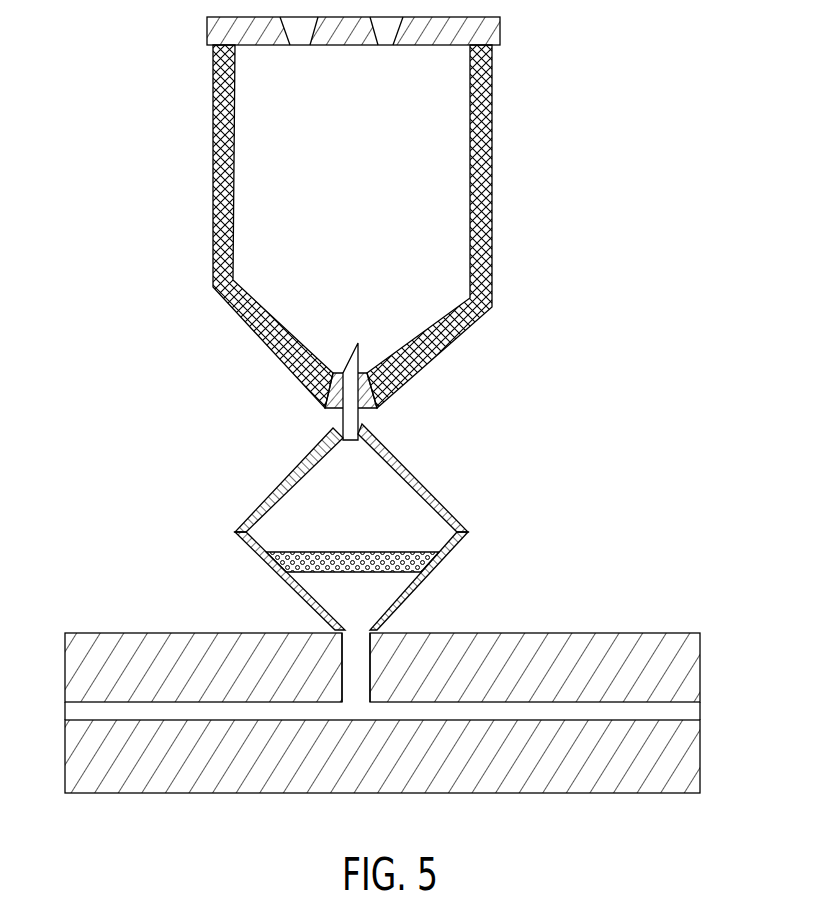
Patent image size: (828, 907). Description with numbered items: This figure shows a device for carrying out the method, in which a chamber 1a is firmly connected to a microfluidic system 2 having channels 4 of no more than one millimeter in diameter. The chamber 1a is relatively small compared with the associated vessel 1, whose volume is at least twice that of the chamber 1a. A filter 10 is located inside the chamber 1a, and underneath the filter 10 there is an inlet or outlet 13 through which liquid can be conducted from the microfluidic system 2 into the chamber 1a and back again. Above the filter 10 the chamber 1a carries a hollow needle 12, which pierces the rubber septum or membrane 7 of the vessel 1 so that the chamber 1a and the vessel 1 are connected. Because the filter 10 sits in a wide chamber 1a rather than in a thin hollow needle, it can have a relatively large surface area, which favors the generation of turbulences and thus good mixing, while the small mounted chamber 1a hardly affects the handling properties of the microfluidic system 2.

The vessel 1 is at (512, 254).
The chamber 1a is at (283, 458).
The membrane 7 is at (377, 403).
The hollow needle 12 is at (352, 377).
The filter 10 is at (345, 552).
The microfluidic system 2 is at (540, 612).
The channels 4 is at (615, 708).
The inlet or outlet 13 is at (352, 653).